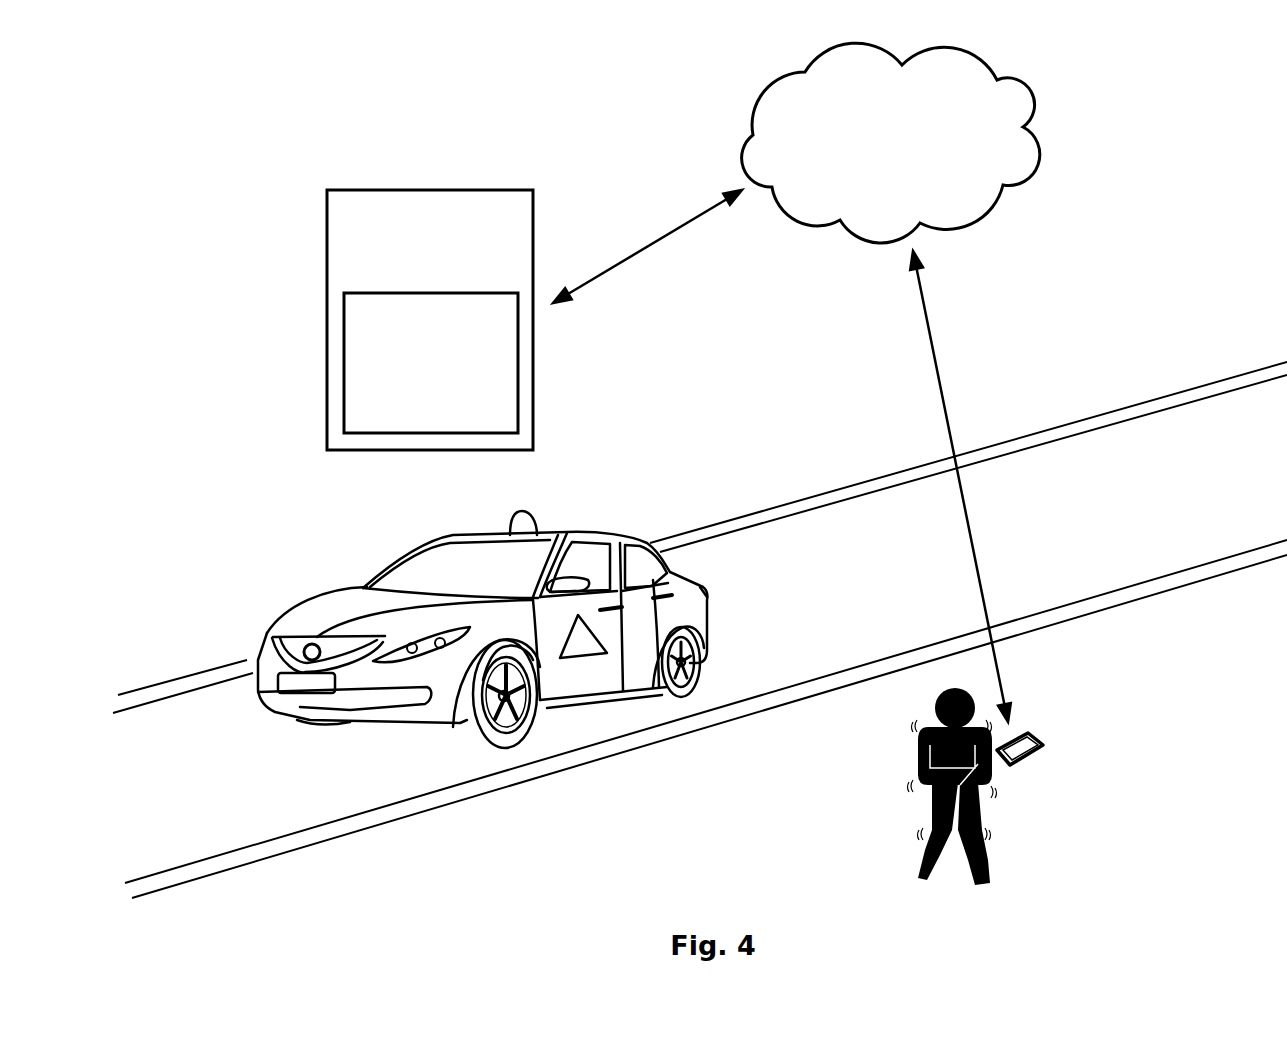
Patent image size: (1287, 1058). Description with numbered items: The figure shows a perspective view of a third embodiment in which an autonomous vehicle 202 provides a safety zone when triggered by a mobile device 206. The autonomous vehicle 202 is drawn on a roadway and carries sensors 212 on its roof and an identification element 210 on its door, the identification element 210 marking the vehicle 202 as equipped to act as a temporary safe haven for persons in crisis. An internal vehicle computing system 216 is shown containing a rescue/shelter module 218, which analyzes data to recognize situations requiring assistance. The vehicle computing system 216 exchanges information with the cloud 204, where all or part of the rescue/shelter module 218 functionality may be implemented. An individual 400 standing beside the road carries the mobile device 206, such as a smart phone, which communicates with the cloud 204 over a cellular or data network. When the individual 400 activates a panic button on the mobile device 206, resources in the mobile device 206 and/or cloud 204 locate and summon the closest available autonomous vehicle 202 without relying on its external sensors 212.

The autonomous vehicle 202 is at (455, 574).
The cloud 204 is at (868, 147).
The mobile device 206 is at (1043, 750).
The identification element 210 is at (580, 650).
The sensors 212 is at (514, 513).
The vehicle computing system 216 is at (491, 277).
The rescue/shelter module 218 is at (412, 414).
The individual 400 is at (927, 707).